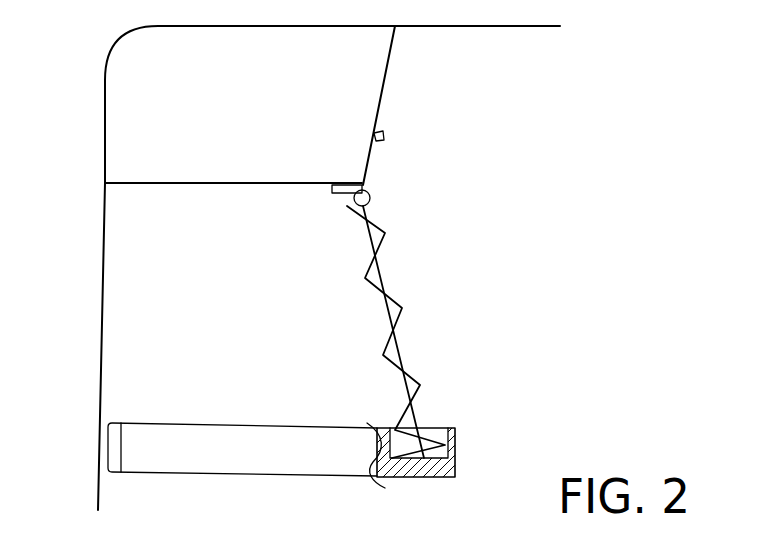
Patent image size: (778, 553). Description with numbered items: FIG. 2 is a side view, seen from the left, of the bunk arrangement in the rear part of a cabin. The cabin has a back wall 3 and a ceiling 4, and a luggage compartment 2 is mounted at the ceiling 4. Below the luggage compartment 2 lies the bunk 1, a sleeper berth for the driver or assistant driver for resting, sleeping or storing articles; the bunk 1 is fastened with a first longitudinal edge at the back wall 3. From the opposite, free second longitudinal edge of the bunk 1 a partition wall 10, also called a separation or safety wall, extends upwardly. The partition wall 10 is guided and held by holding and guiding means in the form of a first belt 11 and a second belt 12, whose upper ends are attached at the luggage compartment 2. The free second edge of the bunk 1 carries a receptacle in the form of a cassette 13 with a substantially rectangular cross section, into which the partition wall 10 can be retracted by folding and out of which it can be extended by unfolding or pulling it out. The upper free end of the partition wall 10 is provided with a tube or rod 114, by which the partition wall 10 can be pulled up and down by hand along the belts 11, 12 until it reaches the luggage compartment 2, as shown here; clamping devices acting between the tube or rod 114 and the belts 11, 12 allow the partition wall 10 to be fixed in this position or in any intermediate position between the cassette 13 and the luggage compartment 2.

The bunk 1 is at (258, 460).
The luggage compartment 2 is at (236, 117).
The back wall 3 is at (100, 293).
The ceiling 4 is at (520, 26).
The partition wall 10 is at (454, 332).
The first belt 11 is at (383, 278).
The second belt 12 is at (383, 278).
The cassette 13 is at (456, 448).
The tube or rod 114 is at (372, 198).